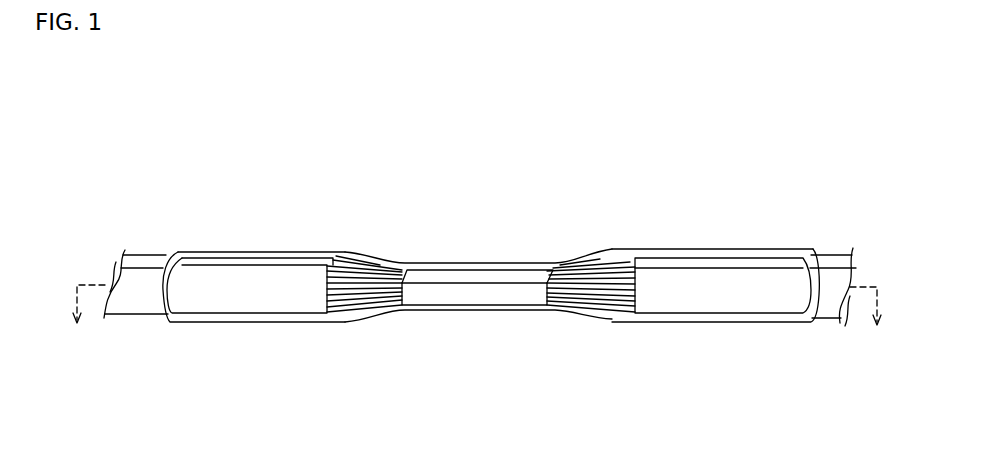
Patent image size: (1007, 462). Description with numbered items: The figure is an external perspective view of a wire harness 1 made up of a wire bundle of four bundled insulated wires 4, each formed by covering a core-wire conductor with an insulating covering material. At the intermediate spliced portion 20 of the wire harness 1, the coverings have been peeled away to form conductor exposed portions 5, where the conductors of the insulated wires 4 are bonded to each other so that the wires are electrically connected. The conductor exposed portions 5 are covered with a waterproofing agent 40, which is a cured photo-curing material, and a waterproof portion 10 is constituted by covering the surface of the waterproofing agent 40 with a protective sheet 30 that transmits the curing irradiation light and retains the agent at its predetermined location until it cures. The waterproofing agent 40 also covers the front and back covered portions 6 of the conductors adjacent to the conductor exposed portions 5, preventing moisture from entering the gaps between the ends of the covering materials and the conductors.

The wire harness 1 is at (176, 194).
The insulated wire 4 is at (150, 263).
The conductor exposed portion 5 is at (358, 257).
The covered portion 6 is at (491, 280).
The waterproof portion 10 is at (474, 246).
The intermediate spliced portion 20 is at (470, 306).
The protective sheet 30 is at (234, 323).
The waterproofing agent 40 is at (375, 309).